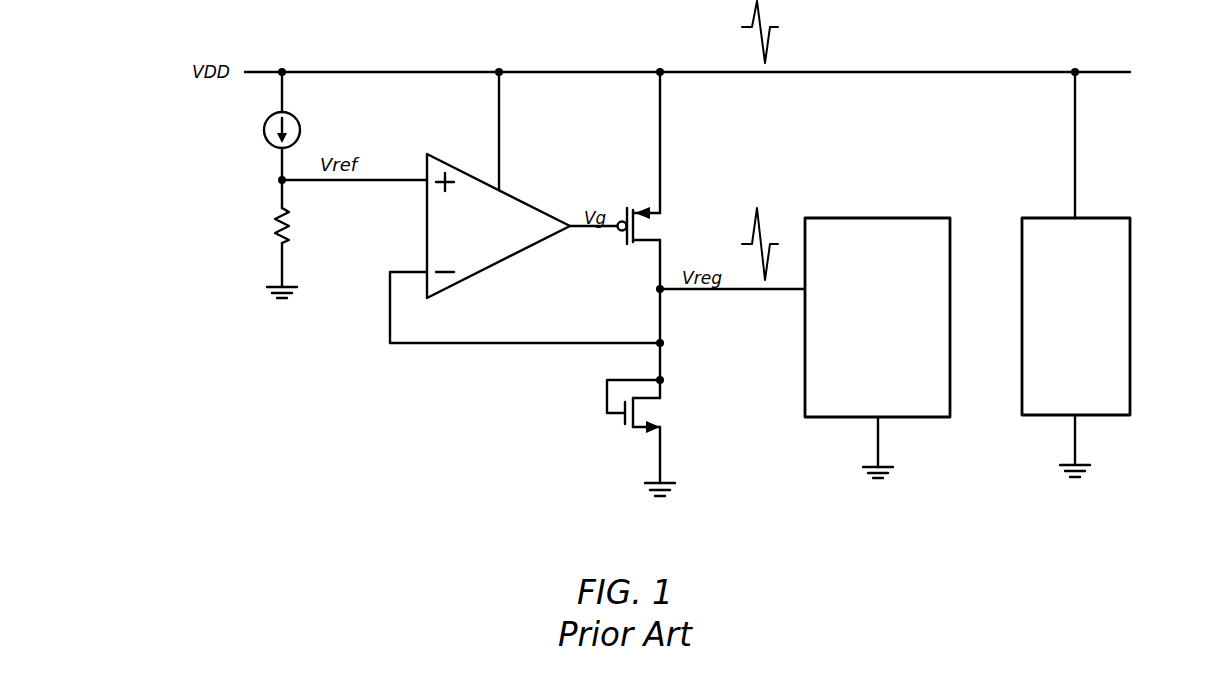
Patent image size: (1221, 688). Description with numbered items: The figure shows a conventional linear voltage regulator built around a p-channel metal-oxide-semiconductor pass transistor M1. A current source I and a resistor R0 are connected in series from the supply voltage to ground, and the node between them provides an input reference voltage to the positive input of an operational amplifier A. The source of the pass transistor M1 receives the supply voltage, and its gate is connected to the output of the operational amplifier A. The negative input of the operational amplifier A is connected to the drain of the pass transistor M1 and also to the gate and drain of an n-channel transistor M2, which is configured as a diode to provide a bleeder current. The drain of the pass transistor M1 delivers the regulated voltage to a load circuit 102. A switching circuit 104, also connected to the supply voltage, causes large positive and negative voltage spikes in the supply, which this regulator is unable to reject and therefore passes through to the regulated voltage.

The load circuit 102 is at (862, 339).
The switching circuit 104 is at (1060, 351).
The PMOS pass transistor M1 is at (639, 180).
The NMOS transistor M2 is at (652, 438).
The resistor R0 is at (271, 239).
The current source I is at (272, 126).
The operational amplifier A is at (498, 185).